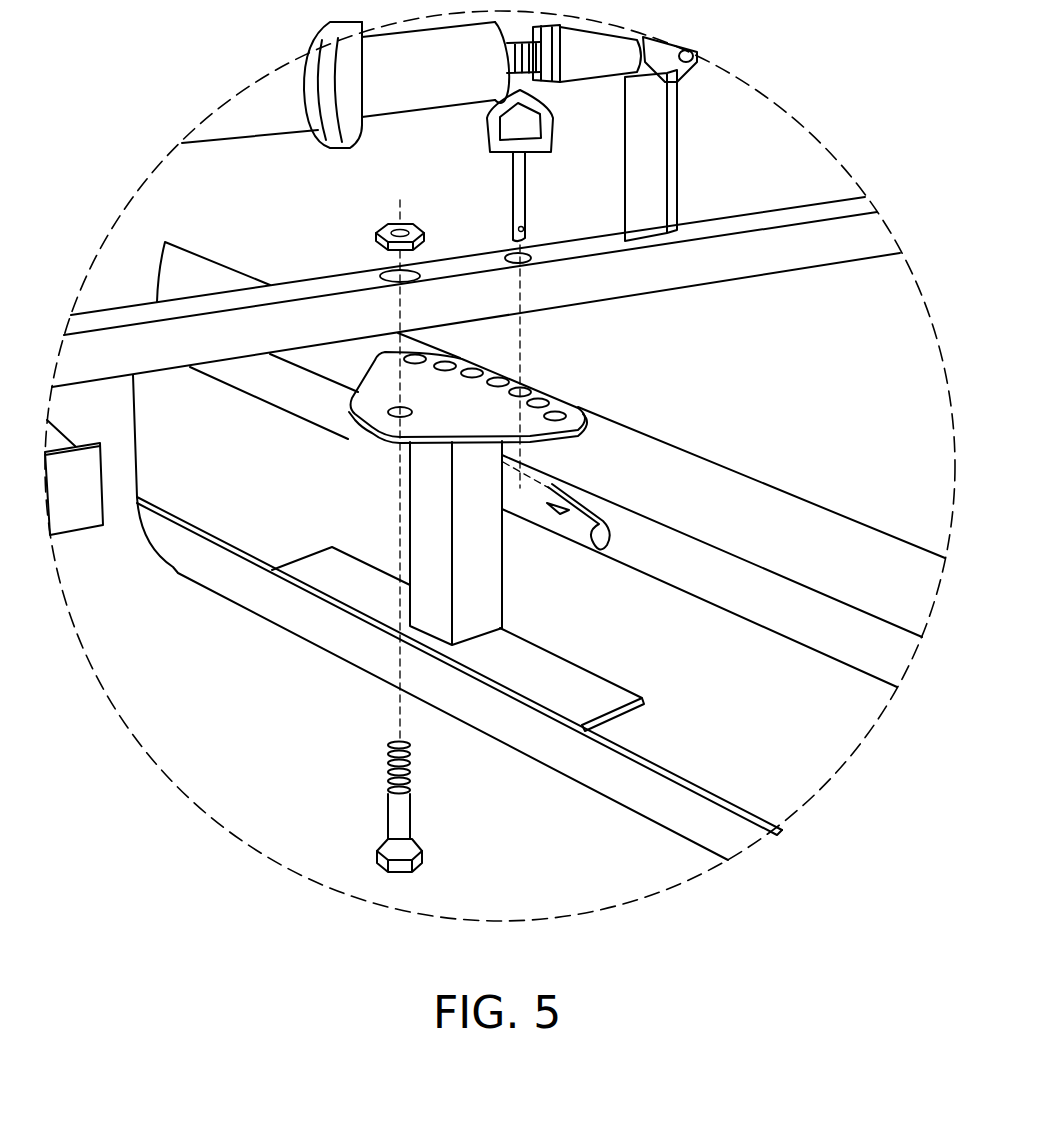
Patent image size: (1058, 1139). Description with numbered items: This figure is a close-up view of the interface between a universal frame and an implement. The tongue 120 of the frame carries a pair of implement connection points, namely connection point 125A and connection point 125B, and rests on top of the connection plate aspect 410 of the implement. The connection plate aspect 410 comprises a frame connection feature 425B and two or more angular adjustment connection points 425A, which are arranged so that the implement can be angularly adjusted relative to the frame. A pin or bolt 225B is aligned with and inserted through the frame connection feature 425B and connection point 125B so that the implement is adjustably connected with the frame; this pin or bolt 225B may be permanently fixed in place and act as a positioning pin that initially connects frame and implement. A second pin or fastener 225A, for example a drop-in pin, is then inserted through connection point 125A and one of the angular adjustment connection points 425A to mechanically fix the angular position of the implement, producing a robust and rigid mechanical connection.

The tongue 120 is at (300, 277).
The connection point 125A is at (530, 253).
The connection point 125B is at (378, 277).
The second pin or fastener 225A is at (510, 200).
The pin or bolt 225B is at (388, 815).
The connection plate aspect 410 is at (530, 428).
The angular adjustment connection points 425A is at (418, 355).
The frame connection feature 425B is at (385, 413).